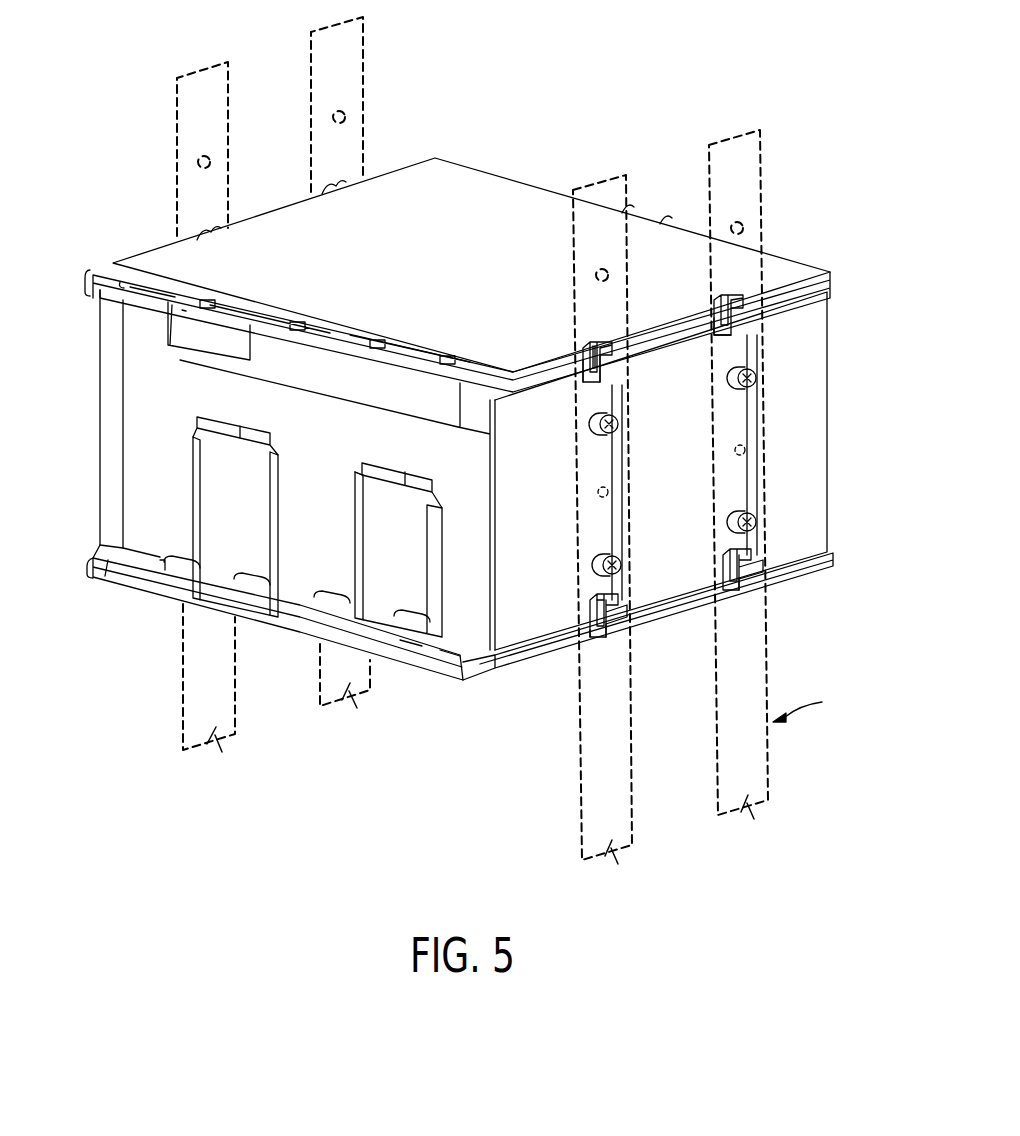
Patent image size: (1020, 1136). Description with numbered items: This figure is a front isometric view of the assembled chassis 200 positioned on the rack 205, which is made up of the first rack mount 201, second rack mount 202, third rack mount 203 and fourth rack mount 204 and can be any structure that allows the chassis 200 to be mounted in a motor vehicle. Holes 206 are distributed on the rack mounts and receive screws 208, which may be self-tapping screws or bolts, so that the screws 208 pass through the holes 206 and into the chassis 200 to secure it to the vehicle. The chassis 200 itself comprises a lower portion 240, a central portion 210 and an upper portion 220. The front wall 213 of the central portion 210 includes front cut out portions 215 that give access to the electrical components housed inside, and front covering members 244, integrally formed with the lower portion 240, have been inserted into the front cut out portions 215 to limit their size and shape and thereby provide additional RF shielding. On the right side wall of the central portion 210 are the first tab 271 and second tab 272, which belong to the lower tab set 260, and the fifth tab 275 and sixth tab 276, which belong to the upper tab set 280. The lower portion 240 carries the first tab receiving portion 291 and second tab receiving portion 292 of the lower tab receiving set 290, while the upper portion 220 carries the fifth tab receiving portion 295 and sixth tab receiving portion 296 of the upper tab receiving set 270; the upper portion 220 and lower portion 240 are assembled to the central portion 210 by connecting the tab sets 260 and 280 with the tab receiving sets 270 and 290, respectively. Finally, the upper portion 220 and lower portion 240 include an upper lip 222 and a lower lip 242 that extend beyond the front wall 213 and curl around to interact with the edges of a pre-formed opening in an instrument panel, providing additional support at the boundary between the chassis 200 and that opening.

The chassis 200 is at (805, 228).
The first rack mount 201 is at (613, 858).
The second rack mount 202 is at (750, 810).
The third rack mount 203 is at (213, 746).
The fourth rack mount 204 is at (347, 703).
The rack 205 is at (818, 700).
The holes 206 is at (734, 453).
The screws 208 is at (757, 379).
The central portion 210 is at (828, 497).
The front wall 213 is at (338, 458).
The front cut out portions 215 is at (215, 436).
The upper portion 220 is at (473, 184).
The upper lip 222 is at (105, 272).
The lower portion 240 is at (532, 665).
The lower lip 242 is at (106, 578).
The front covering members 244 is at (250, 533).
The lower tab set 260 is at (597, 660).
The upper tab receiving set 270 is at (560, 350).
The first tab 271 is at (628, 620).
The second tab 272 is at (765, 582).
The fifth tab 275 is at (612, 372).
The sixth tab 276 is at (742, 312).
The upper tab set 280 is at (590, 396).
The lower tab receiving set 290 is at (628, 648).
The first tab receiving portion 291 is at (613, 606).
The second tab receiving portion 292 is at (762, 573).
The fifth tab receiving portion 295 is at (575, 396).
The sixth tab receiving portion 296 is at (745, 327).